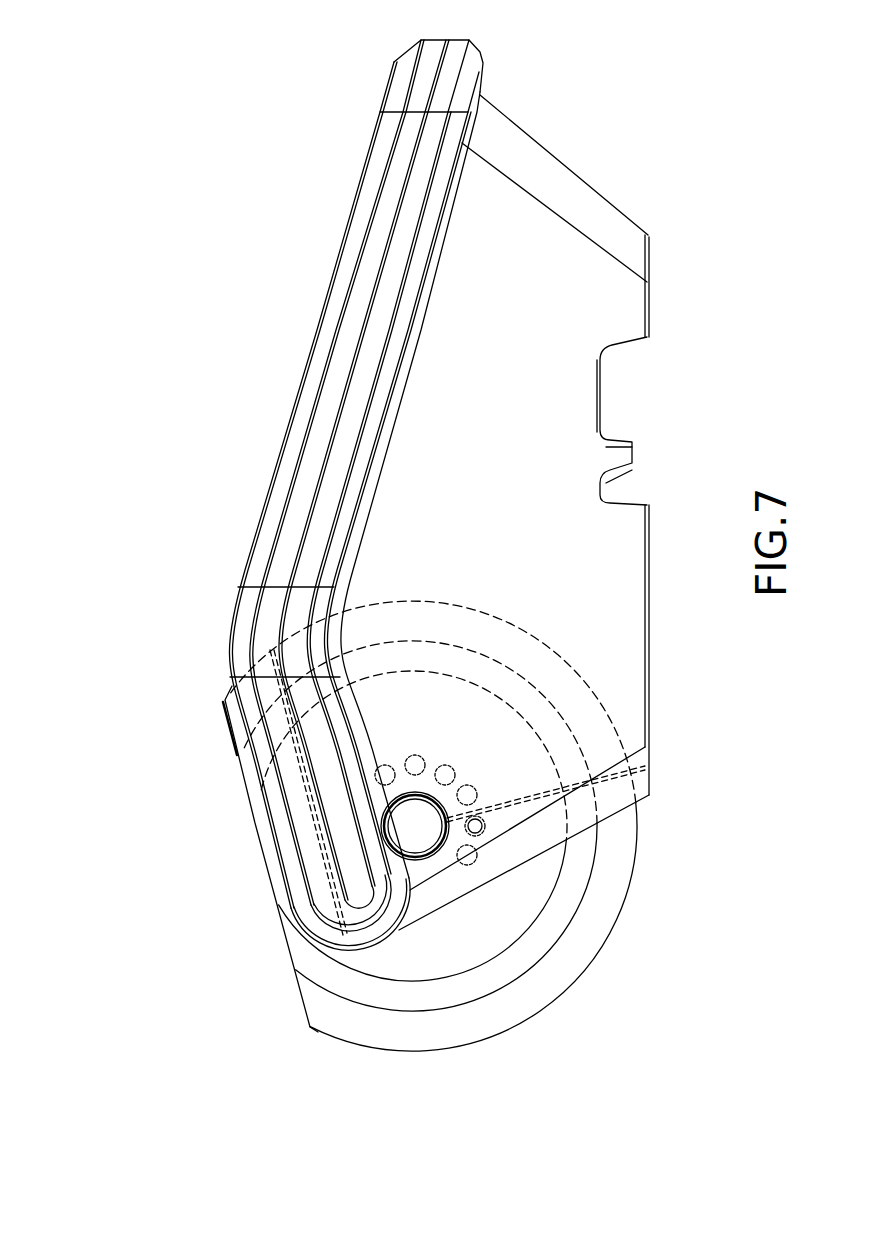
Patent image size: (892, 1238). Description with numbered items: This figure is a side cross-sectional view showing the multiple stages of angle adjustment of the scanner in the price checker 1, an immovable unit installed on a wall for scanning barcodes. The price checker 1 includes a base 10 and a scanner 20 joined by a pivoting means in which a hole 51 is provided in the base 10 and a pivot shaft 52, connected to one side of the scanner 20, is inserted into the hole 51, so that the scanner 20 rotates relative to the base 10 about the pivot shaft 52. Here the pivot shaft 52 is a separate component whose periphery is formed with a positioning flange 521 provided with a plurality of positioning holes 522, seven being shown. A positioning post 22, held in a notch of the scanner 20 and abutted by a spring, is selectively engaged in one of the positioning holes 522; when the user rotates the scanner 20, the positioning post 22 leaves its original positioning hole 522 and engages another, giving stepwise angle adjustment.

The price checker 1 is at (92, 537).
The base 10 is at (363, 163).
The scanner 20 is at (340, 1030).
The positioning post 22 is at (482, 828).
The hole 51 is at (415, 890).
The pivot shaft 52 is at (410, 822).
The positioning flange 521 is at (563, 733).
The positioning holes 522 is at (477, 837).